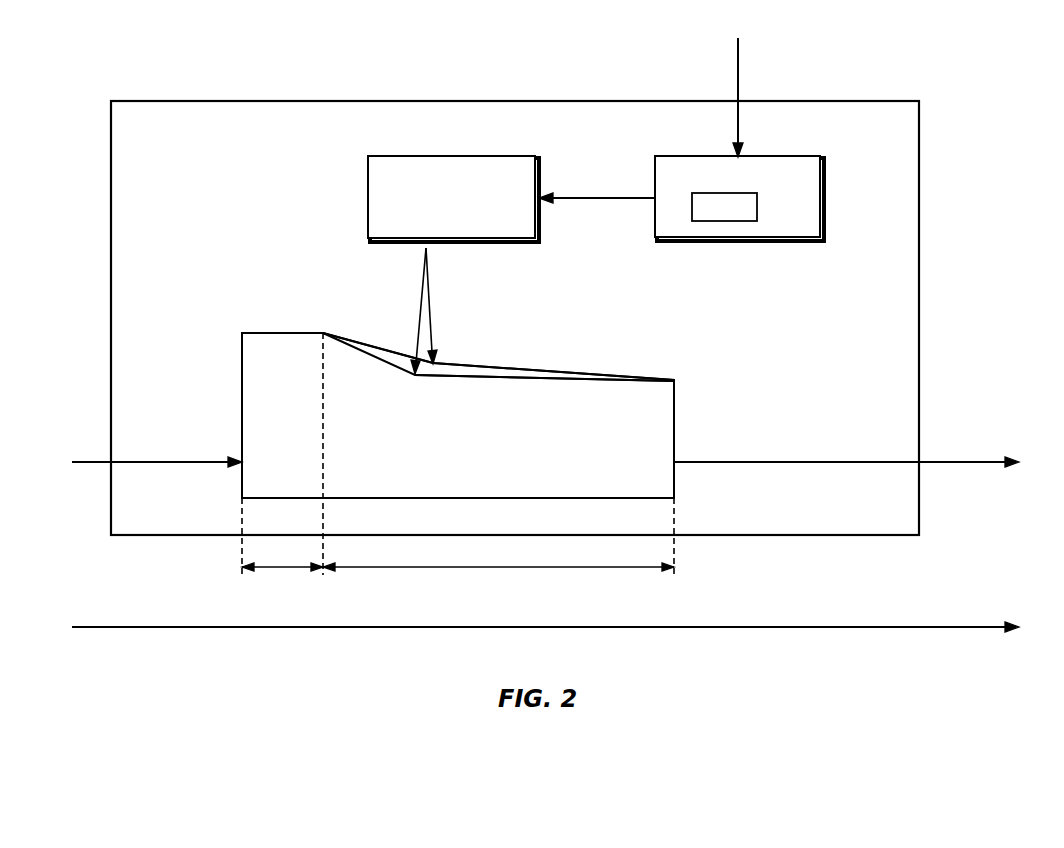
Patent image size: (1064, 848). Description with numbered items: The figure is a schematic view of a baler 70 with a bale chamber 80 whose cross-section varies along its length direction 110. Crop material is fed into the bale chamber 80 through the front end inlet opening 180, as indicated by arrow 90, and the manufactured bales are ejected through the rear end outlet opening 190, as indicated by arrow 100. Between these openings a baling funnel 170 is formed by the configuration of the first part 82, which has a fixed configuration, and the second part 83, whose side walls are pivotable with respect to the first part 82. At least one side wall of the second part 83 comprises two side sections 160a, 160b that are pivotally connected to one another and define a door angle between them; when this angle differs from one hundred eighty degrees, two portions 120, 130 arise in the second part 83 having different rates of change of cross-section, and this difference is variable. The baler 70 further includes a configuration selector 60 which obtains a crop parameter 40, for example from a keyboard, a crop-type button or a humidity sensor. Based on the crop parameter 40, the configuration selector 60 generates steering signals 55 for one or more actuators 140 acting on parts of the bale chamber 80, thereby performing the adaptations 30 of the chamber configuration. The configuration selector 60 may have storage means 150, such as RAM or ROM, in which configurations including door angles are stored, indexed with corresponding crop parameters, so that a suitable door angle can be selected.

The adaptations 30 is at (432, 305).
The crop parameter 40 is at (742, 72).
The steering signals 55 is at (573, 193).
The configuration selector 60 is at (780, 152).
The baler 70 is at (836, 101).
The bale chamber 80 is at (676, 421).
The first part 82 is at (282, 568).
The second part 83 is at (498, 568).
The arrow 90 is at (90, 460).
The arrow 100 is at (955, 460).
The length direction 110 is at (803, 625).
The first portion 120 is at (338, 400).
The second portion 130 is at (481, 390).
The actuators 140 is at (452, 156).
The storage means 150 is at (732, 221).
The side section 160a is at (378, 340).
The side section 160b is at (557, 372).
The baling funnel 170 is at (586, 454).
The front end inlet opening 180 is at (242, 480).
The rear end outlet opening 190 is at (676, 480).